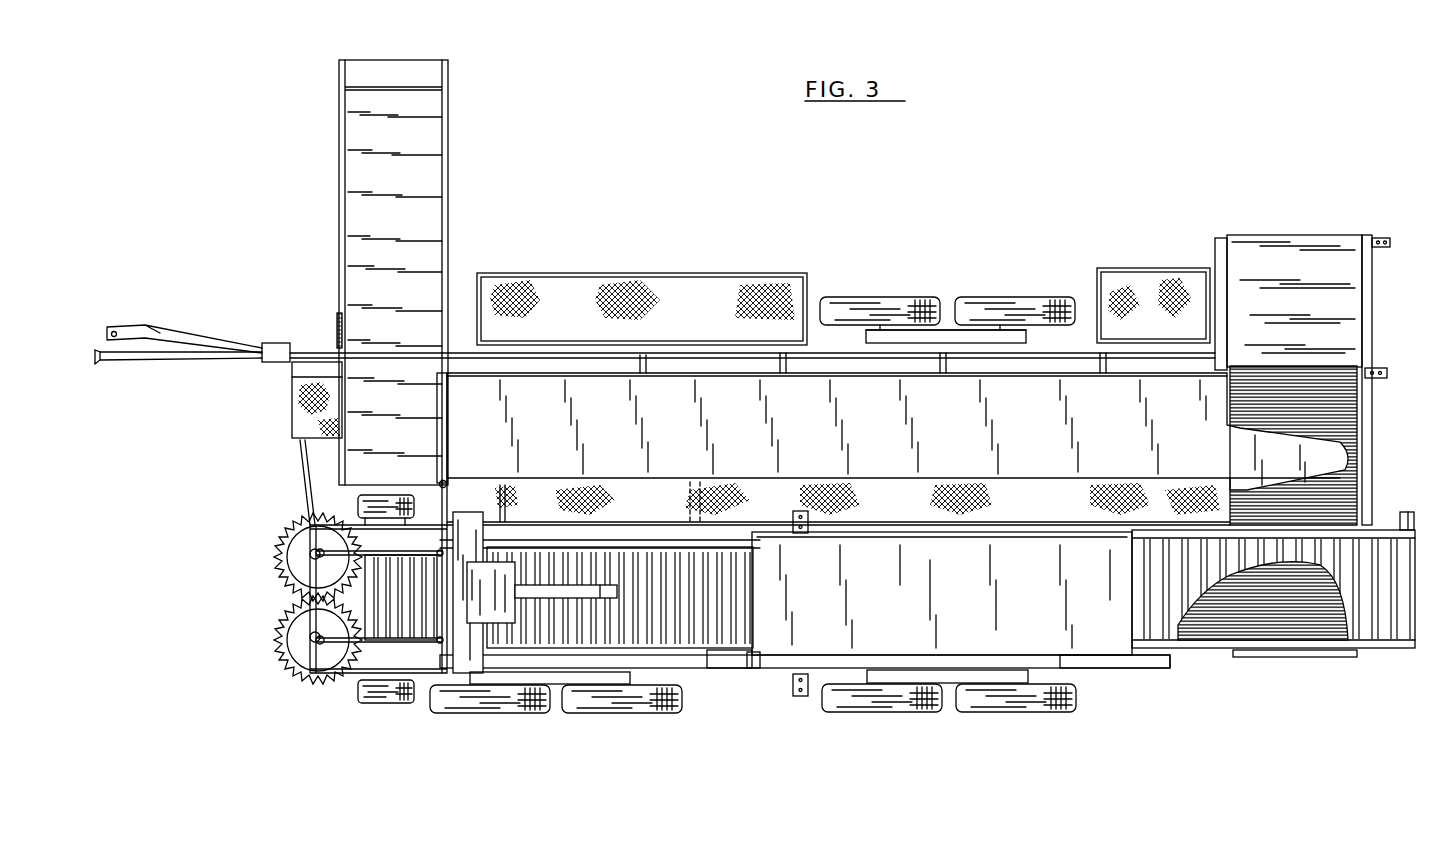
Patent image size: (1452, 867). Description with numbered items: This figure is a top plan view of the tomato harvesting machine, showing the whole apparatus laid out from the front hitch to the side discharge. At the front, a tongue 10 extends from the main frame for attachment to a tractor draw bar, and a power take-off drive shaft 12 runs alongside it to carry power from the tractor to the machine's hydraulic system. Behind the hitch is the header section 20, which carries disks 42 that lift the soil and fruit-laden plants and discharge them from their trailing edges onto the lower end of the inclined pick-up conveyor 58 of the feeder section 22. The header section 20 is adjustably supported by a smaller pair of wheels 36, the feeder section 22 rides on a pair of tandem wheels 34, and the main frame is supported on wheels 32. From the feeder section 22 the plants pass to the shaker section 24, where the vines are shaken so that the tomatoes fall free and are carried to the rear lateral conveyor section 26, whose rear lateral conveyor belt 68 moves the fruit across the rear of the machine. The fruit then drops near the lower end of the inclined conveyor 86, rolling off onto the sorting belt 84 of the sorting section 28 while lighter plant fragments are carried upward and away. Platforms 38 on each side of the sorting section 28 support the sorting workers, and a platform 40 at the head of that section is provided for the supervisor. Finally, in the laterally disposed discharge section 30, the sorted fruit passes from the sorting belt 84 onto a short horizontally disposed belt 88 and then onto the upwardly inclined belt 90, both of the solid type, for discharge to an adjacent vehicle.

The tongue 10 is at (180, 336).
The power take-off drive shaft 12 is at (183, 362).
The header section 20 is at (272, 592).
The feeder section 22 is at (415, 522).
The shaker section 24 is at (1108, 680).
The rear lateral conveyor section 26 is at (1374, 520).
The sorting section 28 is at (946, 272).
The discharge section 30 is at (328, 298).
The wheels 32 is at (985, 305).
The tandem wheels 34 is at (597, 700).
The wheels 36 is at (358, 505).
The platforms 38 is at (693, 290).
The platform 40 is at (292, 417).
The disks 42 is at (278, 556).
The pick-up conveyor 58 is at (420, 620).
The rear lateral conveyor belt 68 is at (1335, 503).
The sorting belt 84 is at (892, 430).
The inclined conveyor 86 is at (1300, 255).
The horizontally disposed belt 88 is at (418, 392).
The upwardly inclined belt 90 is at (436, 215).